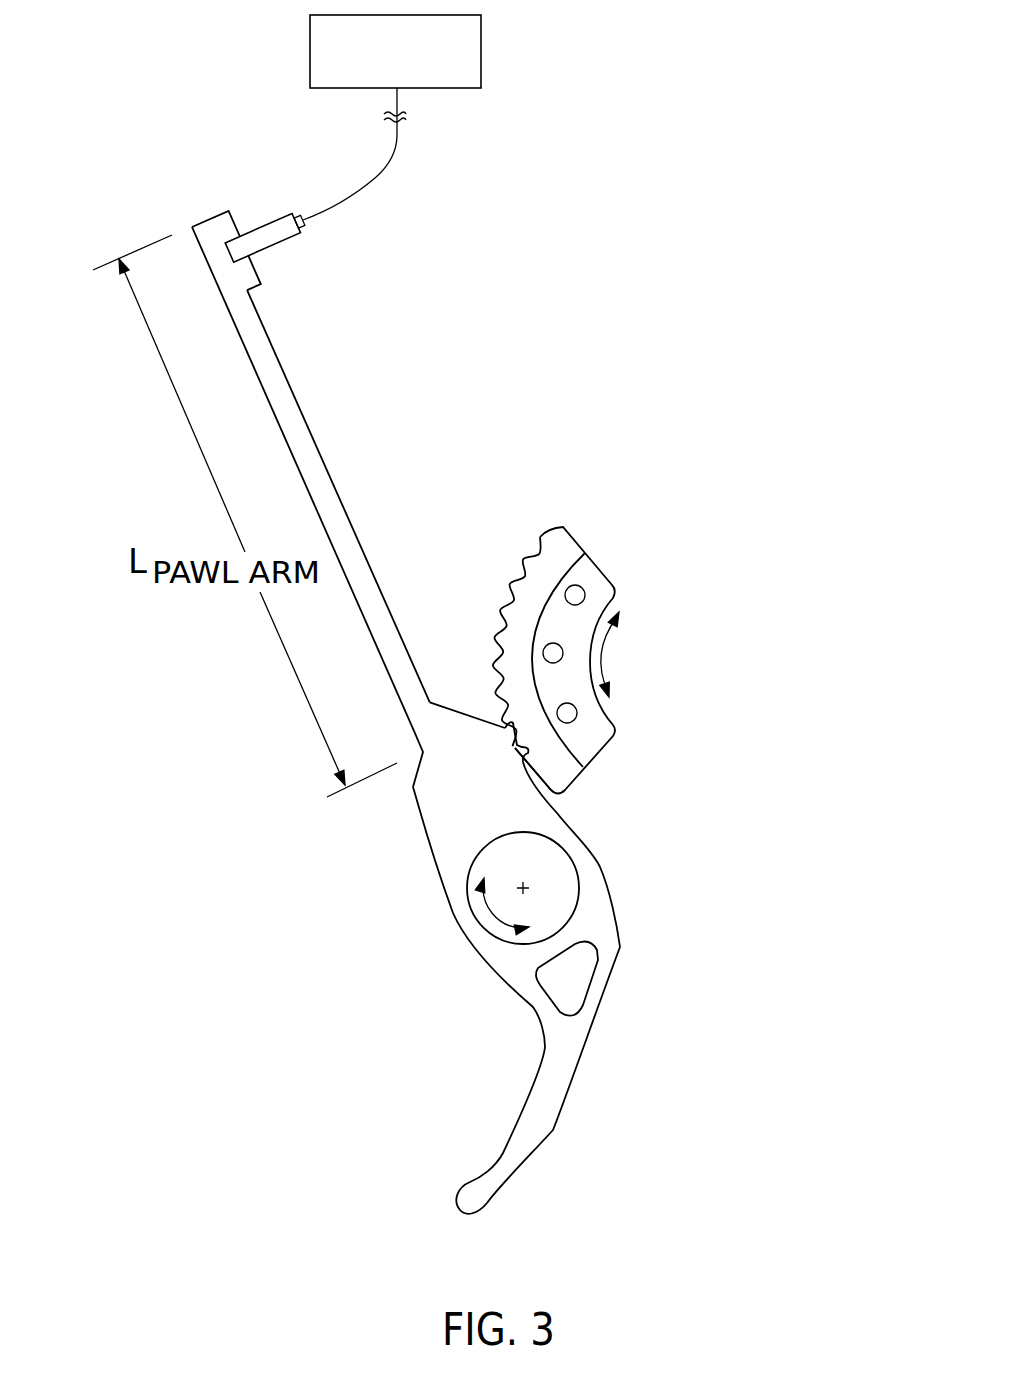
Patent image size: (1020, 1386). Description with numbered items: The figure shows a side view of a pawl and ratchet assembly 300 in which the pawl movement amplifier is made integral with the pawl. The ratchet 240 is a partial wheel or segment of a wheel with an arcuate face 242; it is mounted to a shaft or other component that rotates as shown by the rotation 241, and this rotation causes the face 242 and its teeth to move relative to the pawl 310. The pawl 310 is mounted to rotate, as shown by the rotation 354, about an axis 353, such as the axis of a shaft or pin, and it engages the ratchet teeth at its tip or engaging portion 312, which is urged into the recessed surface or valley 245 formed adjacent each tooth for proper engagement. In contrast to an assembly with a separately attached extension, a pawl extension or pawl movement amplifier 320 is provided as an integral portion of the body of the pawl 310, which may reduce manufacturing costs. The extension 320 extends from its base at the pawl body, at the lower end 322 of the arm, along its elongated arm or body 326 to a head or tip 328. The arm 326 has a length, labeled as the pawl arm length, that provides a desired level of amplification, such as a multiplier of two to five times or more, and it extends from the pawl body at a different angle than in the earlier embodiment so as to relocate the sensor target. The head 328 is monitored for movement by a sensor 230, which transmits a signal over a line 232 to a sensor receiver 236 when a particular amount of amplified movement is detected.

The sensor receiver 236 is at (437, 89).
The line 232 is at (380, 183).
The sensor 230 is at (273, 238).
The head 328 is at (207, 265).
The pawl and ratchet assembly 300 is at (482, 293).
The pawl extension 320 is at (360, 412).
The arm 326 is at (322, 532).
The pawl arm lower end 322 is at (413, 733).
The pawl 310 is at (640, 930).
The engaging portion 312 is at (518, 733).
The axis 353 is at (527, 885).
The rotation 354 is at (487, 905).
The ratchet 240 is at (690, 645).
The face 242 is at (545, 532).
The rotation 241 is at (632, 654).
The valley 245 is at (520, 757).